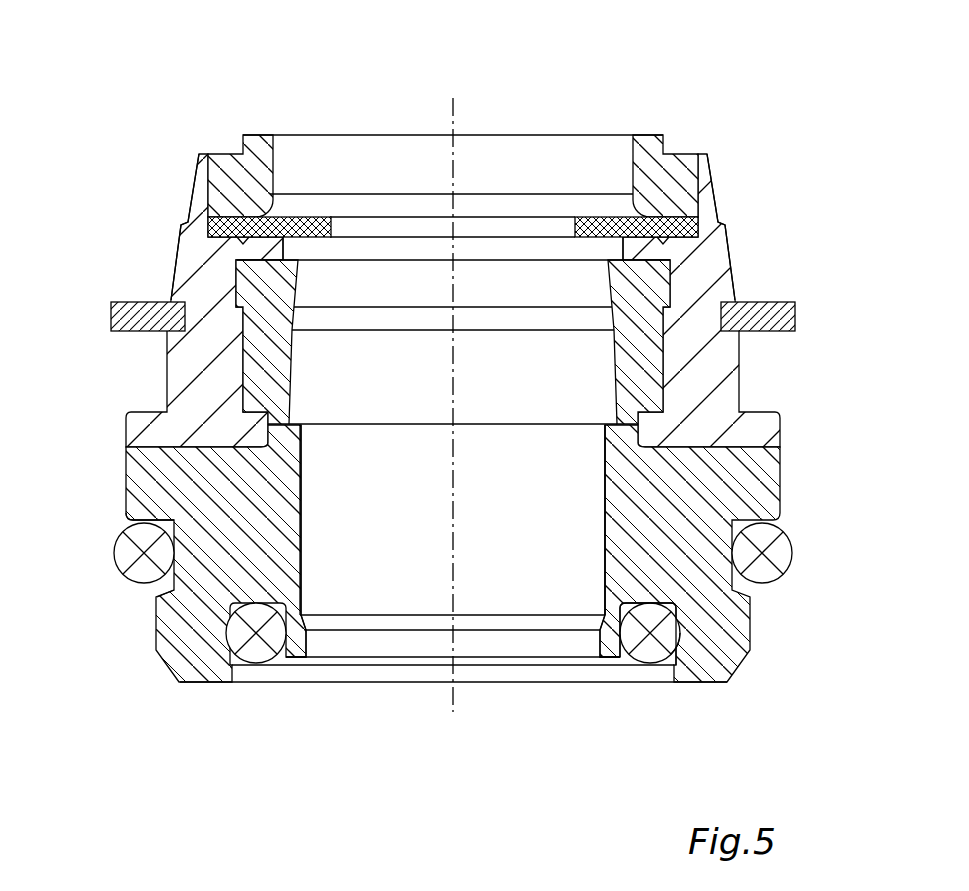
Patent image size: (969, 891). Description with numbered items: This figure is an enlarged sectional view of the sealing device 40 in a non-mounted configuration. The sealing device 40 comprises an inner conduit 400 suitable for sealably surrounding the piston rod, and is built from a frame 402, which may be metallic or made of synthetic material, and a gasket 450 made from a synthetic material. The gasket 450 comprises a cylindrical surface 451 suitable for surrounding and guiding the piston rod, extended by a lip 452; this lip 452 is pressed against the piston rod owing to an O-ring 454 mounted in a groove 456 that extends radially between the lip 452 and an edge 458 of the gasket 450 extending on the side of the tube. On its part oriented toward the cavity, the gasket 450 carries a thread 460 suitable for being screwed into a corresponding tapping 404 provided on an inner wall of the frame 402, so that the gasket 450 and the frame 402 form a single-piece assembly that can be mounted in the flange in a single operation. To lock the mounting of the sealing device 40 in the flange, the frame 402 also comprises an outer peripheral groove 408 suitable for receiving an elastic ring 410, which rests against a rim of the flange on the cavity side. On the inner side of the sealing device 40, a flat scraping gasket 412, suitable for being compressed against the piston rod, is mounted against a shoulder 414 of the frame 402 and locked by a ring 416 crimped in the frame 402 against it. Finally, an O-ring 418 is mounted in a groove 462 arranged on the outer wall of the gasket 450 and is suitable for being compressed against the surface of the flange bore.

The sealing device 40 is at (702, 110).
The inner conduit 400 is at (380, 559).
The frame 402 is at (713, 388).
The tapping 404 is at (656, 331).
The outer peripheral groove 408 is at (179, 304).
The elastic ring 410 is at (111, 312).
The flat scraping gasket 412 is at (211, 226).
The shoulder 414 is at (291, 247).
The ring 416 is at (252, 151).
The O-ring 418 is at (143, 553).
The gasket 450 is at (706, 497).
The cylindrical surface 451 is at (304, 531).
The lip 452 is at (608, 637).
The O-ring 454 is at (650, 640).
The groove 456 is at (677, 663).
The edge 458 is at (680, 647).
The thread 460 is at (668, 364).
The groove 462 is at (161, 571).